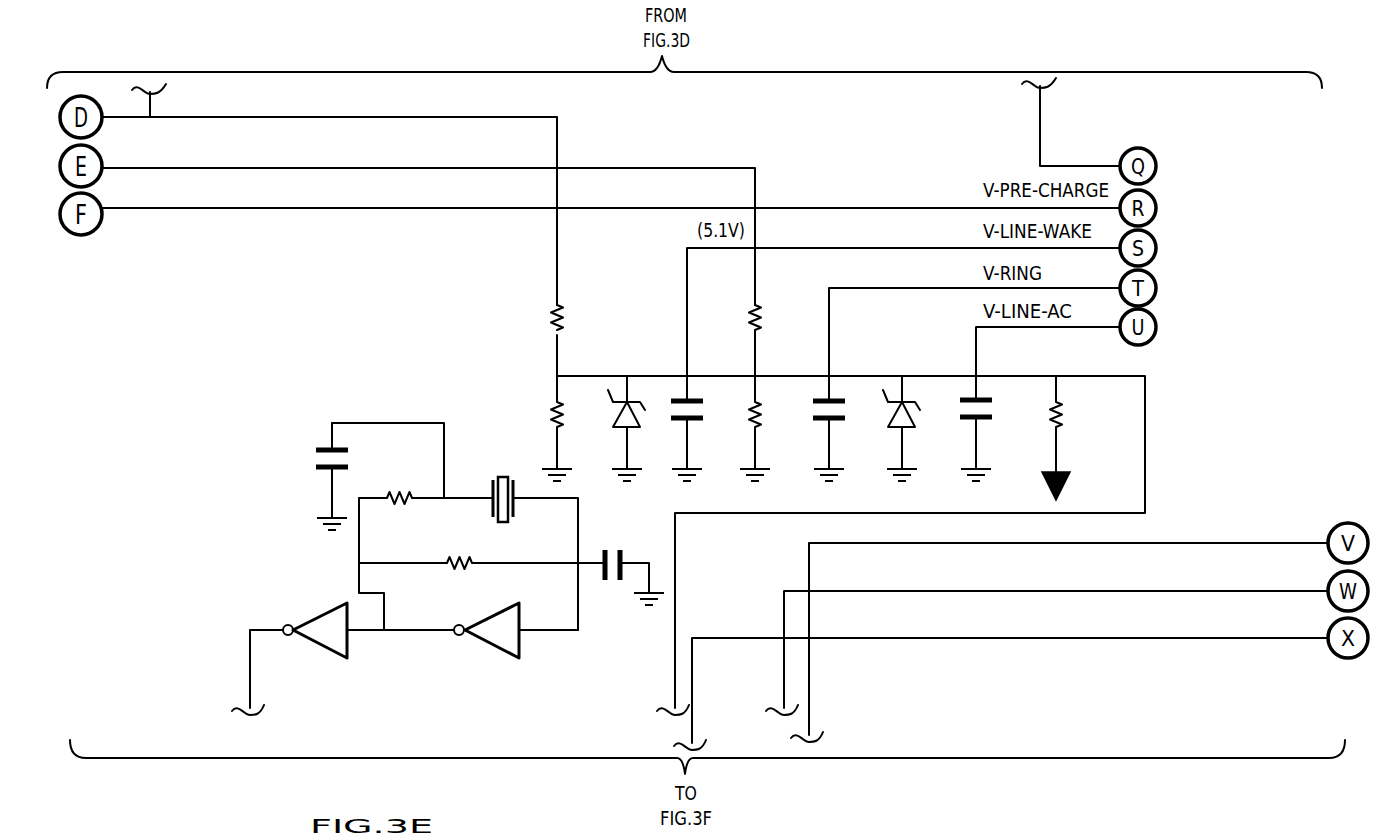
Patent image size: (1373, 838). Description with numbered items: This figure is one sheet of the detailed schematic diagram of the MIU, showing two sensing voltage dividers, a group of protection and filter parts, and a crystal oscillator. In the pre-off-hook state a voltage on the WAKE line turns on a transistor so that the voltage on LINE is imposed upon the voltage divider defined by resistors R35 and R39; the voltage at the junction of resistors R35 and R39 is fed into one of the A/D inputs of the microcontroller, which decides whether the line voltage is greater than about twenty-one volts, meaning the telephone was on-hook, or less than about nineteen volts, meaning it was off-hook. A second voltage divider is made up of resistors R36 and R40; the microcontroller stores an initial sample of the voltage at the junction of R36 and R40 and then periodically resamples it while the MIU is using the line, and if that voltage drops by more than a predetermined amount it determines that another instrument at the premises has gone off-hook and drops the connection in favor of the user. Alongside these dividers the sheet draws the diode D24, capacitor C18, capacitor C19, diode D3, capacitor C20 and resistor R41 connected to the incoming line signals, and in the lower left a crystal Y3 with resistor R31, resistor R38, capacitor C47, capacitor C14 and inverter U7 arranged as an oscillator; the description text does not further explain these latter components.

The resistor R35 is at (538, 338).
The resistor R39 is at (542, 428).
The zener diode D24 MBZ5231B D24 is at (629, 398).
The capacitor C18 .1 C18 is at (707, 427).
The resistor R36 is at (775, 335).
The resistor R40 is at (770, 428).
The capacitor C19 .1 C19 is at (845, 427).
The zener diode D3 MBZ5231B D3 is at (912, 414).
The capacitor C20 180pF C20 is at (1001, 436).
The resistor R41 100K R41 is at (1074, 438).
The capacitor C47 18pF C47 is at (310, 476).
The resistor R31 620 R31 is at (401, 499).
The crystal Y3 6MHz Y3 is at (478, 482).
The resistor R38 10M R38 is at (482, 540).
The capacitor C14 18pF C14 is at (628, 551).
The hex inverter U7 74HC04 U7 is at (426, 616).